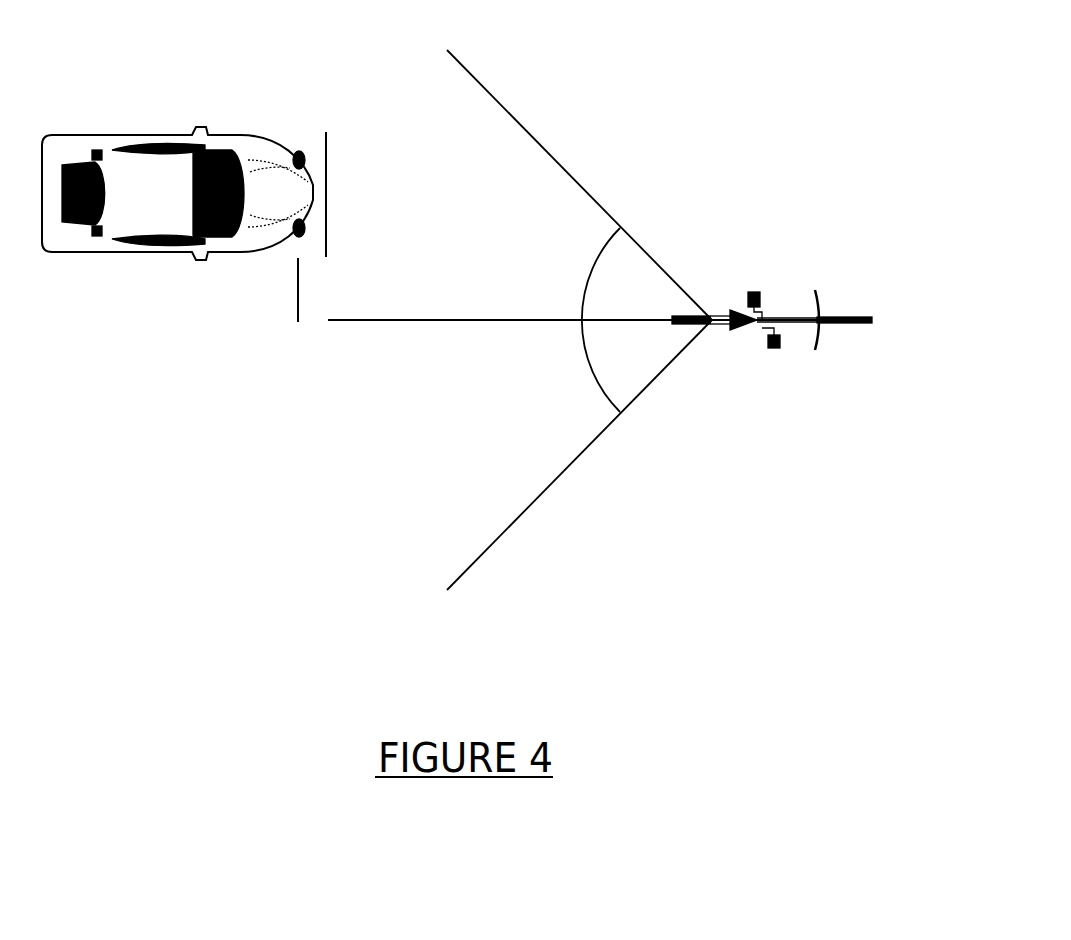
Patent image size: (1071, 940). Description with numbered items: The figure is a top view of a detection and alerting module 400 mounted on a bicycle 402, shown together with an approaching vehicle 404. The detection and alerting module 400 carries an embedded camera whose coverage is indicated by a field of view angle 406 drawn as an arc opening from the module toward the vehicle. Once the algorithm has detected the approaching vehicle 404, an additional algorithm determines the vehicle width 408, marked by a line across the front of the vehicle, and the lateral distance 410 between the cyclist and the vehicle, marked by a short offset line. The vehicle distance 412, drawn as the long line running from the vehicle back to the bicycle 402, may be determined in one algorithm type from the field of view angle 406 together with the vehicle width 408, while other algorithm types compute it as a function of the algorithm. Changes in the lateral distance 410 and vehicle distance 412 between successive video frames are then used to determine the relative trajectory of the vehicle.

The detection and alerting module 400 is at (712, 343).
The bicycle 402 is at (858, 310).
The approaching vehicle 404 is at (165, 108).
The field of view angle 406 is at (608, 252).
The vehicle width 408 is at (335, 192).
The lateral distance 410 is at (287, 293).
The vehicle distance 412 is at (440, 330).